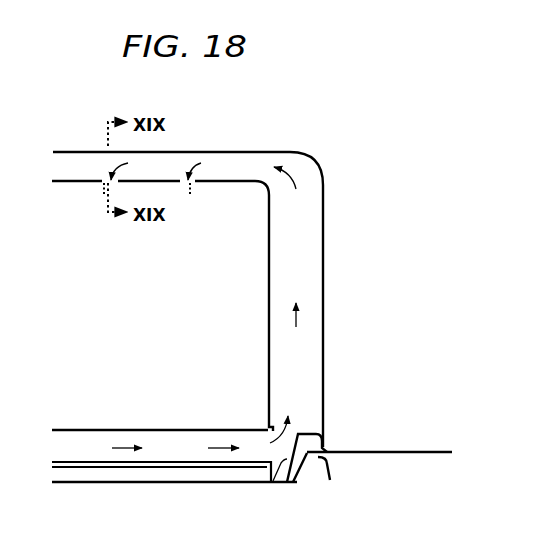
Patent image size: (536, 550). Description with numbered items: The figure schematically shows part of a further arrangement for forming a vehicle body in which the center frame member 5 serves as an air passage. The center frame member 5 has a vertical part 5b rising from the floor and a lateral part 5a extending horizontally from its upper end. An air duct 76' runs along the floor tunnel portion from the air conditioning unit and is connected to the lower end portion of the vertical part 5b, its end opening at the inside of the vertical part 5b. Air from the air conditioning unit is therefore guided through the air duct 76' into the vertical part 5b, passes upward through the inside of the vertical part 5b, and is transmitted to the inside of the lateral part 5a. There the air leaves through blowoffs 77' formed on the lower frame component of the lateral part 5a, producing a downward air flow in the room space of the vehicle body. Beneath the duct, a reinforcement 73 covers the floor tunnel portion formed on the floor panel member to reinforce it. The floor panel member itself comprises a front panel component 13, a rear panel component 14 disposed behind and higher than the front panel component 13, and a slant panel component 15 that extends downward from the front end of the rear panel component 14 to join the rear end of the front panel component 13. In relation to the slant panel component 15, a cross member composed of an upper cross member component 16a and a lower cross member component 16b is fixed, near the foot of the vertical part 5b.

The center frame member 5 is at (329, 164).
The lateral part 5a is at (208, 149).
The vertical part 5b is at (326, 293).
The blowoffs 77' is at (144, 204).
The air duct 76' is at (160, 404).
The reinforcement 73 is at (181, 470).
The front panel component 13 is at (241, 485).
The slant panel component 15 is at (273, 483).
The upper cross member component 16a is at (306, 429).
The lower cross member component 16b is at (327, 470).
The rear panel component 14 is at (388, 452).